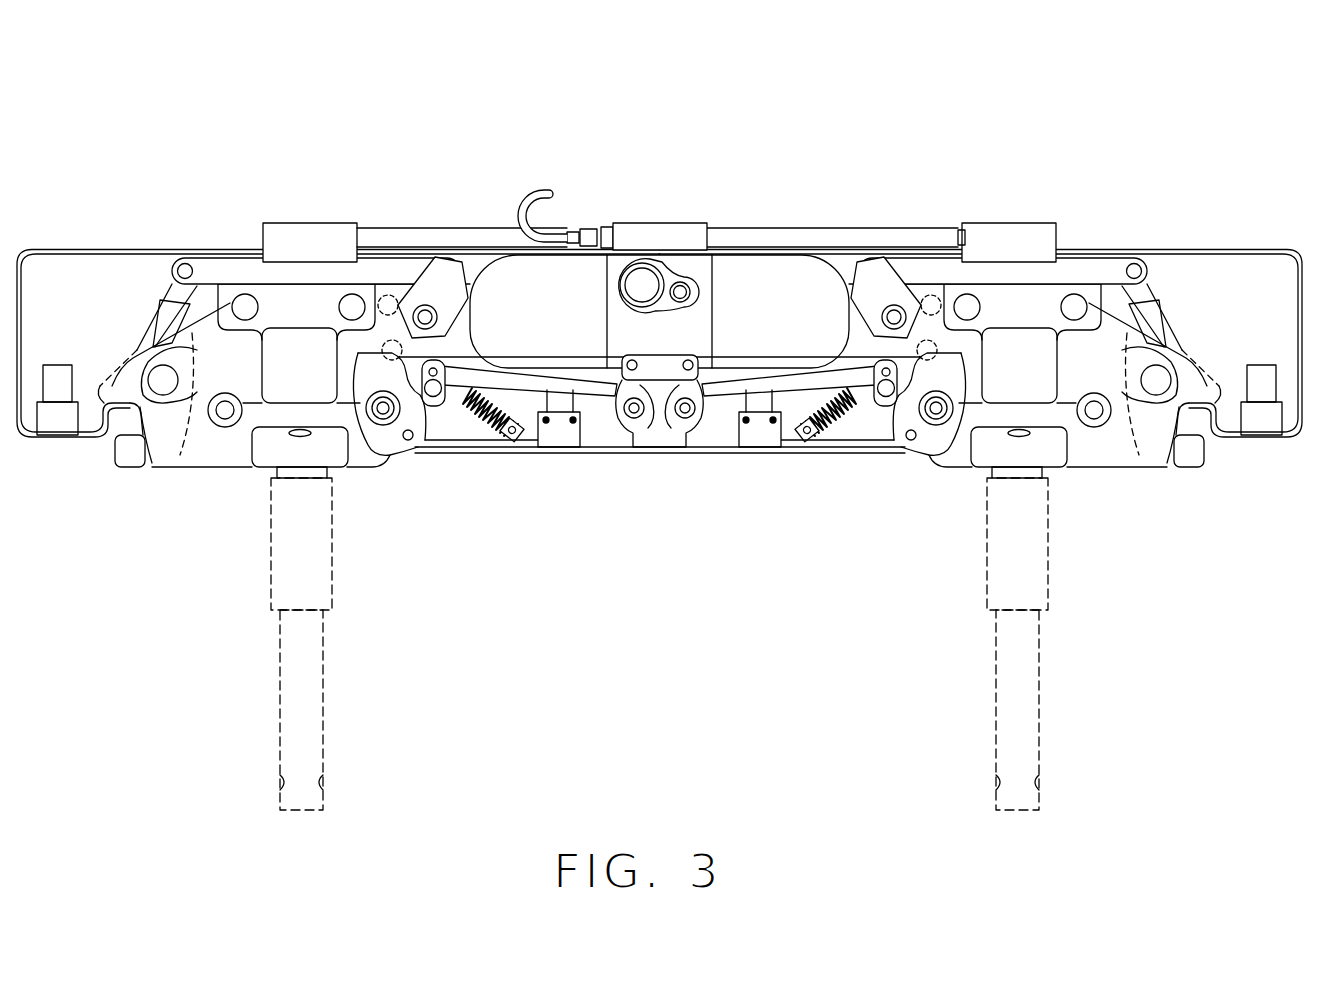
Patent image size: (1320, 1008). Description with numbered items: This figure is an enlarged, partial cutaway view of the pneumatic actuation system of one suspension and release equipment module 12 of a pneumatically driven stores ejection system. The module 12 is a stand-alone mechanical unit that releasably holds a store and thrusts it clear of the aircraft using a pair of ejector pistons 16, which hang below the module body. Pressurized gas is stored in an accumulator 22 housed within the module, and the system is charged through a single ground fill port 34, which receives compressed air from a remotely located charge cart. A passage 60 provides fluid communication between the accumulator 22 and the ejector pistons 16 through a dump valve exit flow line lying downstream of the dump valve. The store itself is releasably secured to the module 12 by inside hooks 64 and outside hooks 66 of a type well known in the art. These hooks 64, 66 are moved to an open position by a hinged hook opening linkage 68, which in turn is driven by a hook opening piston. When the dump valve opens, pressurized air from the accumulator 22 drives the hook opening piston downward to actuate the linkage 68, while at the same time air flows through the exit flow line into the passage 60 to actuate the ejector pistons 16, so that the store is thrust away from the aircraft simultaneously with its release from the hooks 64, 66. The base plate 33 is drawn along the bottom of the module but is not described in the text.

The suspension and release equipment module 12 is at (659, 455).
The ejector piston 16 is at (290, 562).
The accumulator 22 is at (784, 323).
The base plate 33 is at (744, 456).
The ground fill port 34 is at (519, 190).
The passage 60 is at (465, 237).
The inside hook 64 is at (398, 452).
The outside hook 66 is at (135, 454).
The hook opening linkage 68 is at (250, 272).